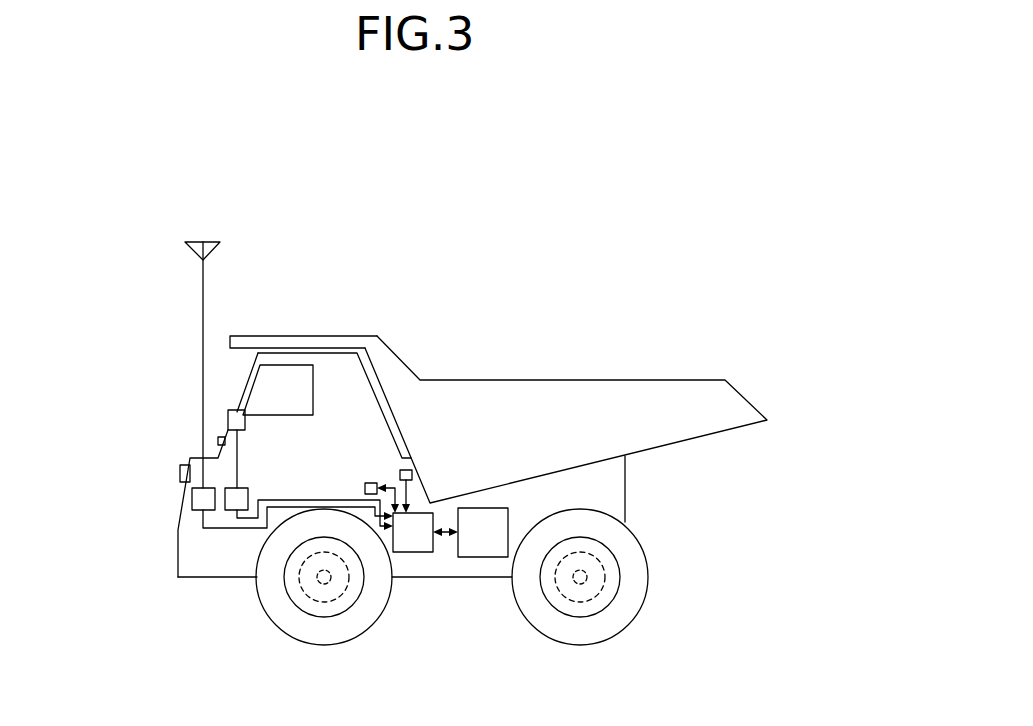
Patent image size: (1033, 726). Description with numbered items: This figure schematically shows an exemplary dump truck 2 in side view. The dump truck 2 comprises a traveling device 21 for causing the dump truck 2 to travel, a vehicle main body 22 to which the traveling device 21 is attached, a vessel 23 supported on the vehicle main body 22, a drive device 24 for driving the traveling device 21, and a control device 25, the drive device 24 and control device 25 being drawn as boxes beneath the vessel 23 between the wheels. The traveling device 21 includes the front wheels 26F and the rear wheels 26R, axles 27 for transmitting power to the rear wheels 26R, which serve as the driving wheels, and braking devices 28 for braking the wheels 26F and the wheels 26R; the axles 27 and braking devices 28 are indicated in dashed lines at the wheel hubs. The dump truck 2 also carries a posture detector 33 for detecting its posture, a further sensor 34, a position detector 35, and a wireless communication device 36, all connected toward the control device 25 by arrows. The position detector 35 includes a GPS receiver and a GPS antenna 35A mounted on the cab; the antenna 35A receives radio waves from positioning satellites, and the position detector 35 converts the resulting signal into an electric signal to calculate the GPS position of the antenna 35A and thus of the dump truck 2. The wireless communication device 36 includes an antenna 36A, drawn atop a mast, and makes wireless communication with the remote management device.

The dump truck 2 is at (618, 204).
The traveling device 21 is at (658, 553).
The vehicle main body 22 is at (635, 500).
The vessel 23 is at (478, 380).
The drive device 24 is at (483, 558).
The control device 25 is at (413, 553).
The wheels 26F is at (331, 646).
The wheels 26R is at (582, 646).
The axles 27 is at (587, 583).
The braking devices 28 is at (567, 600).
The posture detector 33 is at (365, 488).
The obstacle sensor 34 is at (400, 472).
The position detector 35 is at (248, 496).
The GPS antenna 35A is at (228, 416).
The wireless communication device 36 is at (192, 499).
The antenna 36A is at (208, 240).